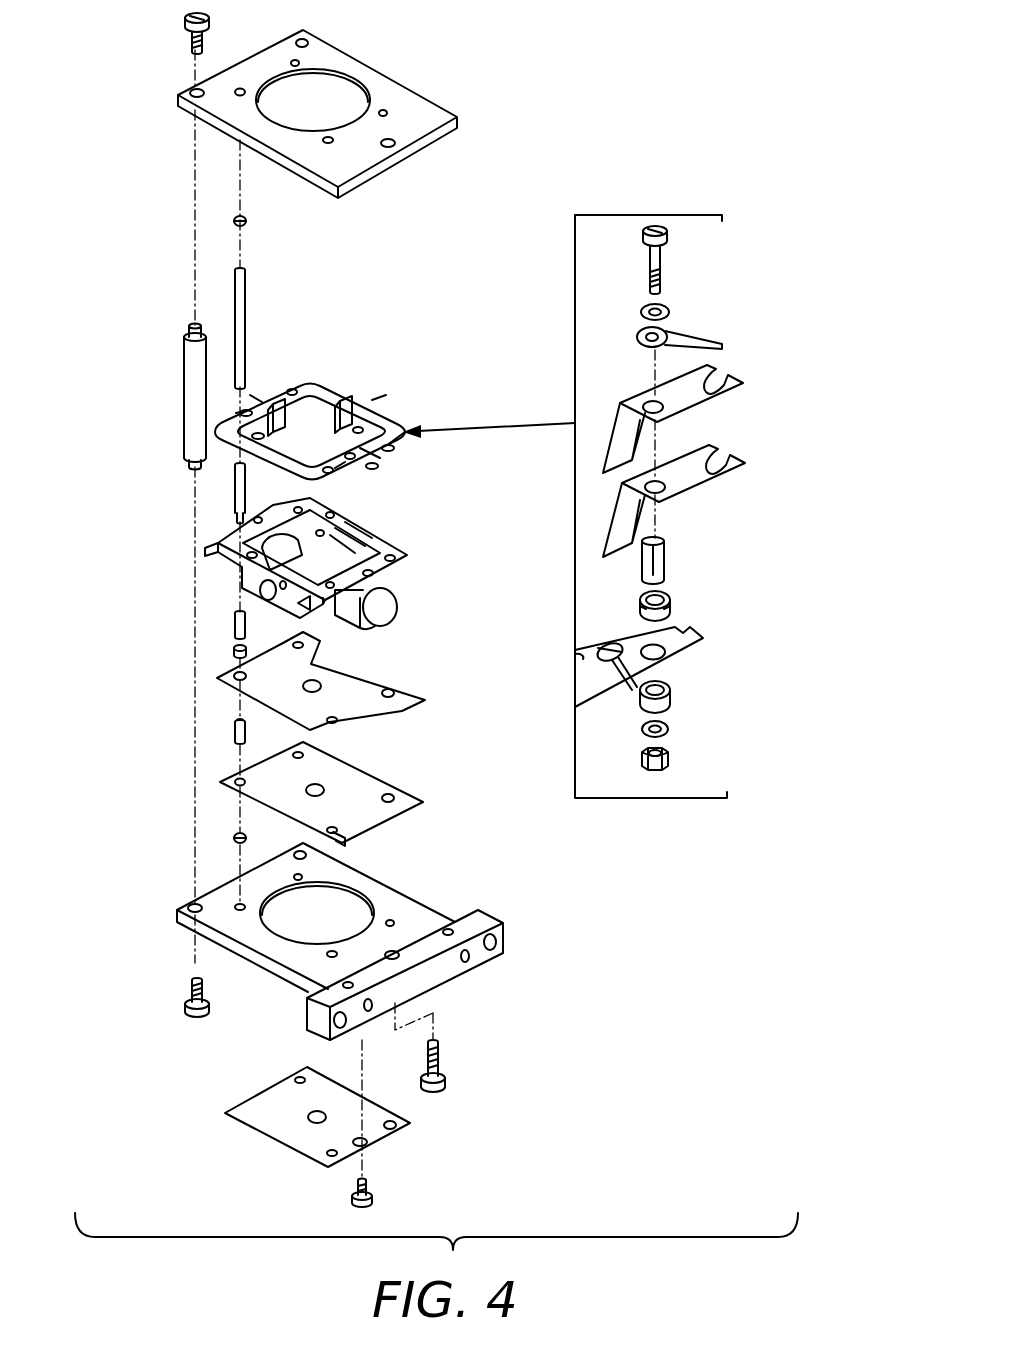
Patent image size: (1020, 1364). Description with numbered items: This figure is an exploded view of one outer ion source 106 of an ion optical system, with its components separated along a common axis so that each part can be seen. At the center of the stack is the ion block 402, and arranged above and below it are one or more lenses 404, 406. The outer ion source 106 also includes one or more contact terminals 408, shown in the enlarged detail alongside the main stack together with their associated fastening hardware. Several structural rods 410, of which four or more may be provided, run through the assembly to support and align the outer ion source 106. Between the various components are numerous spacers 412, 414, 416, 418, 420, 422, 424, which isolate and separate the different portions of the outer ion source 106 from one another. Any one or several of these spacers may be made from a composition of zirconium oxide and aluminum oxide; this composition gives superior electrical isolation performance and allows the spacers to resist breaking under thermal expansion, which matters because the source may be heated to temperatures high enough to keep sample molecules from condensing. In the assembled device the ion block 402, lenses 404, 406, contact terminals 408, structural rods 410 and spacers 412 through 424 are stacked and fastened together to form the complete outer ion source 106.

The outer ion source 106 is at (126, 106).
The ion block 402 is at (222, 550).
The lens 404 is at (222, 782).
The lens 406 is at (225, 1112).
The contact terminal 408 is at (668, 333).
The structural rod 410 is at (237, 303).
The spacer 412 is at (234, 220).
The spacer 414 is at (233, 648).
The spacer 416 is at (233, 728).
The spacer 418 is at (233, 838).
The spacer 420 is at (667, 553).
The spacer 422 is at (670, 600).
The spacer 424 is at (672, 690).